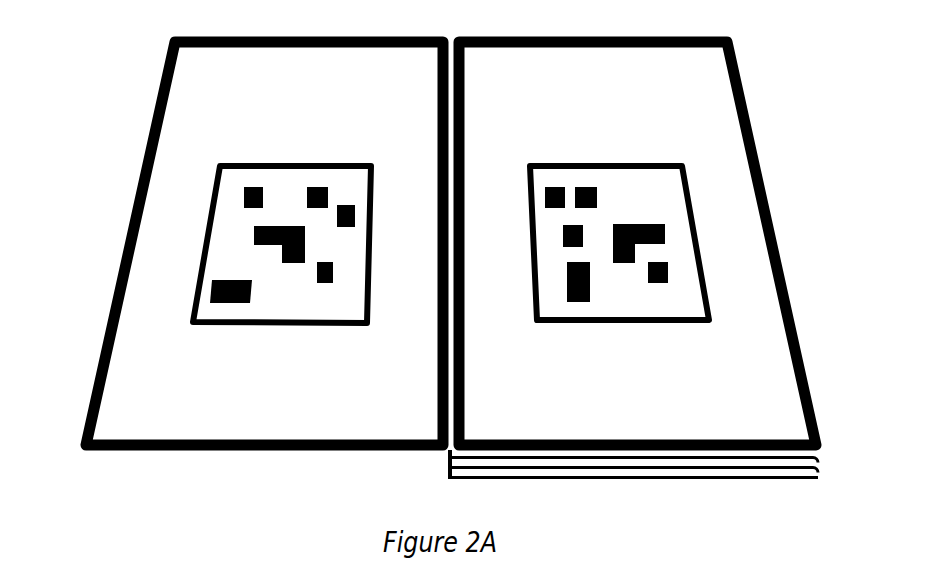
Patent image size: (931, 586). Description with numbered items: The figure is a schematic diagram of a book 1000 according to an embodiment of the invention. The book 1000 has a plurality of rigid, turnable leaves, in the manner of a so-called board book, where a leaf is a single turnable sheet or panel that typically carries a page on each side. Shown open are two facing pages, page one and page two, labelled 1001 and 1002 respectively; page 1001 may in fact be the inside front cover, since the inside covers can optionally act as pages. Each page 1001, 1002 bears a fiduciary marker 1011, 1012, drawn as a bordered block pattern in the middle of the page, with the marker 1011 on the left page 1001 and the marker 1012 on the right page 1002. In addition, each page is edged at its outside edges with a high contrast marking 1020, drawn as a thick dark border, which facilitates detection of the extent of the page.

The book 1000 is at (455, 267).
The page 1 1001 is at (264, 243).
The page 2 1002 is at (637, 243).
The fiduciary marker 1011 is at (192, 204).
The fiduciary marker 1012 is at (714, 203).
The high contrast marking 1020 is at (762, 75).